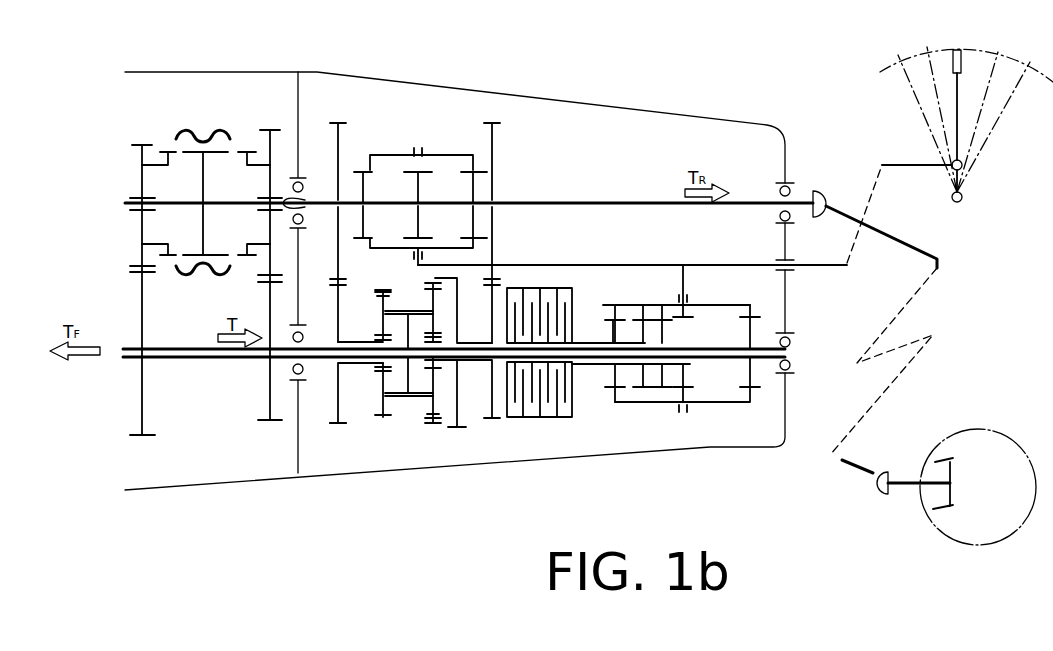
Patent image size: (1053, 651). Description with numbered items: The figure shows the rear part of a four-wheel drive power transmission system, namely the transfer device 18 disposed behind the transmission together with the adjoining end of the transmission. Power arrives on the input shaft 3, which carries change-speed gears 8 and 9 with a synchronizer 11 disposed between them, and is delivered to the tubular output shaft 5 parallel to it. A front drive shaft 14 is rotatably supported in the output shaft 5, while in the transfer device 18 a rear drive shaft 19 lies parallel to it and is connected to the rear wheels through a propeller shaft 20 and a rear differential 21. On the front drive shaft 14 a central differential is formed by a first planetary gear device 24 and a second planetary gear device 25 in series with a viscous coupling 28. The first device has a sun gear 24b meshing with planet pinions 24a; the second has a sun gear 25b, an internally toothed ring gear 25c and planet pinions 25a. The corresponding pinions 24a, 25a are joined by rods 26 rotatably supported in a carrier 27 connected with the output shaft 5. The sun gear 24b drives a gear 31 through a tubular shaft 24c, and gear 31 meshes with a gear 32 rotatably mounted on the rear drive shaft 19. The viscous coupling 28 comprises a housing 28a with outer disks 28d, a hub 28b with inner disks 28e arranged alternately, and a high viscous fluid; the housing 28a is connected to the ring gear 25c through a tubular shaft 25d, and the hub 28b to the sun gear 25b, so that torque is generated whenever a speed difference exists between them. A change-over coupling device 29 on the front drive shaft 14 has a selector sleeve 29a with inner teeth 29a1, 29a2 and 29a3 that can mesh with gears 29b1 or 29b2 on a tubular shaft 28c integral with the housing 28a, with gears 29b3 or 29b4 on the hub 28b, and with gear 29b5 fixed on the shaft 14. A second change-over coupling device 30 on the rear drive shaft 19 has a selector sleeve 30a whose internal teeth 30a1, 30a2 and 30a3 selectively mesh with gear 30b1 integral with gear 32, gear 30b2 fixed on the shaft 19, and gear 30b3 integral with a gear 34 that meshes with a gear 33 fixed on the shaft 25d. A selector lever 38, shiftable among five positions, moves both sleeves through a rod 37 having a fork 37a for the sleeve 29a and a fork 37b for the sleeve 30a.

The input shaft 3 is at (124, 203).
The tubular output shaft 5 is at (228, 362).
The change-speed gear 8 is at (138, 142).
The change-speed gear 9 is at (282, 128).
The synchronizer 11 is at (210, 126).
The front drive shaft 14 is at (182, 362).
The transfer device 18 is at (570, 92).
The rear drive shaft 19 is at (621, 188).
The propeller shaft 20 is at (912, 248).
The rear differential 21 is at (932, 522).
The first planetary gear device 24 is at (342, 430).
The planet pinions 24a is at (338, 424).
The sun gear 24b is at (380, 338).
The tubular shaft 24c is at (388, 380).
The second planetary gear device 25 is at (444, 440).
The planet pinions 25a is at (424, 296).
The sun gear 25b is at (452, 372).
The ring gear 25c is at (432, 428).
The tubular shaft 25d is at (468, 342).
The rods 26 is at (383, 292).
The carrier 27 is at (407, 378).
The viscous coupling 28 is at (545, 430).
The housing 28a is at (572, 418).
The hub 28b is at (510, 365).
The tubular shaft 28c is at (602, 368).
The outer disks 28d is at (608, 332).
The inner disks 28e is at (545, 318).
The change-over coupling device 29 is at (728, 435).
The selector sleeve 29a is at (702, 398).
The inner teeth 29a1 is at (620, 396).
The inner teeth 29a2 is at (684, 400).
The inner teeth 29a3 is at (775, 402).
The gear 29b1 is at (612, 318).
The gear 29b2 is at (640, 316).
The gear 29b3 is at (664, 316).
The gear 29b4 is at (686, 310).
The gear 29b5 is at (742, 318).
The second change-over coupling device 30 is at (420, 108).
The selector sleeve 30a is at (460, 150).
The internal teeth 30a1 is at (362, 170).
The internal teeth 30a2 is at (432, 168).
The internal teeth 30a3 is at (480, 165).
The gear 30b1 is at (366, 240).
The gear 30b2 is at (424, 240).
The gear 30b3 is at (482, 230).
The gear 31 is at (322, 412).
The gear 32 is at (322, 263).
The gear 33 is at (496, 415).
The gear 34 is at (500, 255).
The rod 37 is at (585, 245).
The fork 37a is at (686, 270).
The fork 37b is at (412, 258).
The selector lever 38 is at (962, 143).